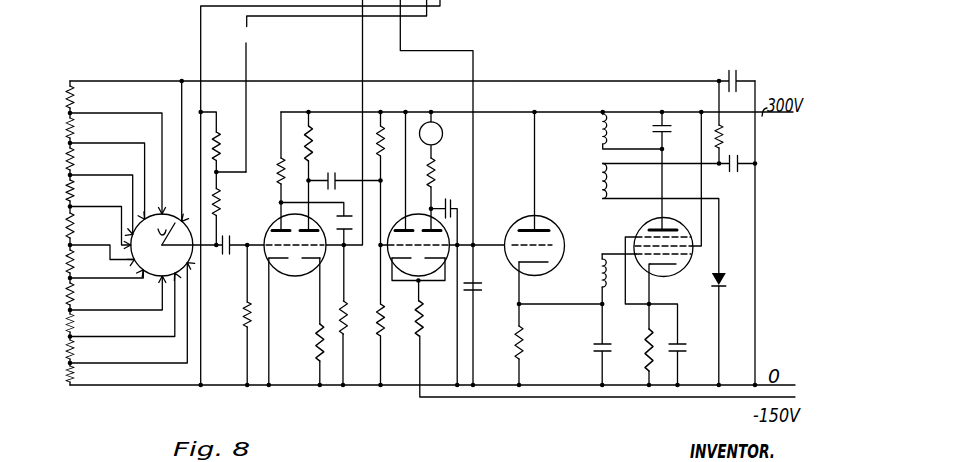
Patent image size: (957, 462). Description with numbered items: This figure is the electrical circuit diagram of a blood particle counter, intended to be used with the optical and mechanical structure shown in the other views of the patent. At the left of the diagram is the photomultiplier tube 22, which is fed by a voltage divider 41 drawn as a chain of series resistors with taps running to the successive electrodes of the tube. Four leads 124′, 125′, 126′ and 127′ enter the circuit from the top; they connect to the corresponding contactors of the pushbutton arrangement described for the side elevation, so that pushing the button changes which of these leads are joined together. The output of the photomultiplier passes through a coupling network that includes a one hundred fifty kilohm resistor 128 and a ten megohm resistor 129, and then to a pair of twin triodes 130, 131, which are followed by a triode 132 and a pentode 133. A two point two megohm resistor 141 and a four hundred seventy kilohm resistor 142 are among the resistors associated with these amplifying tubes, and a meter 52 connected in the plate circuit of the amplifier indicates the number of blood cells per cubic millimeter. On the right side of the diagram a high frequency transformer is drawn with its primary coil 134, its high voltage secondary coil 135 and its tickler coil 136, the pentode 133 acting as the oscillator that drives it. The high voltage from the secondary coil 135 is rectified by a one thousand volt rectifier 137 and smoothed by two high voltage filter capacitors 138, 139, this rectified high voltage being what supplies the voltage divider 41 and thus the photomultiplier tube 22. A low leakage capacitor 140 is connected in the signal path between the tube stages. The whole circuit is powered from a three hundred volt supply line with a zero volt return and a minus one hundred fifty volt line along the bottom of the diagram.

The photomultiplier tube 22 is at (148, 276).
The voltage divider 41 is at (62, 346).
The meter 52 is at (437, 149).
The lead 124' is at (336, 86).
The lead 125' is at (437, 193).
The lead 126' is at (291, 193).
The lead 127' is at (340, 122).
The resistor 128 is at (221, 200).
The resistor 129 is at (223, 140).
The twin triode 130 is at (289, 276).
The twin triode 131 is at (401, 277).
The triode 132 is at (503, 262).
The pentode 133 is at (637, 277).
The primary coil 134 is at (600, 132).
The high voltage secondary coil 135 is at (601, 180).
The tickler coil 136 is at (603, 284).
The rectifier 137 is at (732, 280).
The high voltage filter capacitor 138 is at (742, 159).
The high voltage filter capacitor 139 is at (739, 76).
The low leakage capacitor 140 is at (468, 293).
The resistor 141 is at (380, 148).
The resistor 142 is at (377, 304).